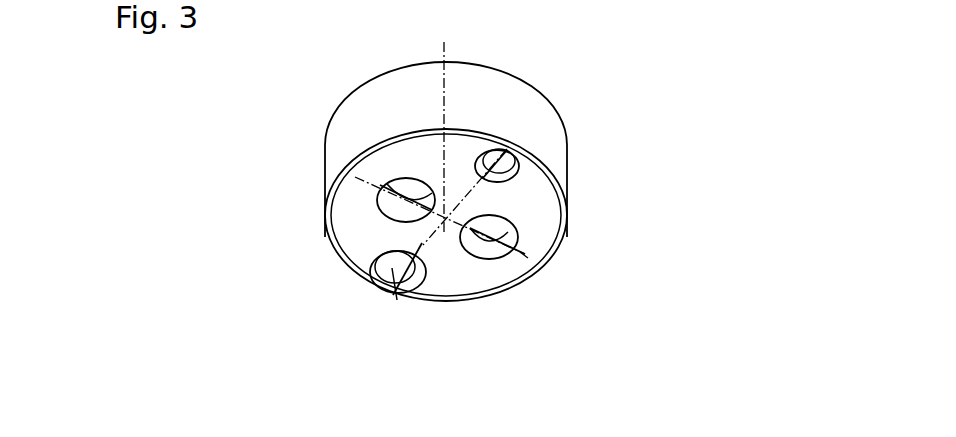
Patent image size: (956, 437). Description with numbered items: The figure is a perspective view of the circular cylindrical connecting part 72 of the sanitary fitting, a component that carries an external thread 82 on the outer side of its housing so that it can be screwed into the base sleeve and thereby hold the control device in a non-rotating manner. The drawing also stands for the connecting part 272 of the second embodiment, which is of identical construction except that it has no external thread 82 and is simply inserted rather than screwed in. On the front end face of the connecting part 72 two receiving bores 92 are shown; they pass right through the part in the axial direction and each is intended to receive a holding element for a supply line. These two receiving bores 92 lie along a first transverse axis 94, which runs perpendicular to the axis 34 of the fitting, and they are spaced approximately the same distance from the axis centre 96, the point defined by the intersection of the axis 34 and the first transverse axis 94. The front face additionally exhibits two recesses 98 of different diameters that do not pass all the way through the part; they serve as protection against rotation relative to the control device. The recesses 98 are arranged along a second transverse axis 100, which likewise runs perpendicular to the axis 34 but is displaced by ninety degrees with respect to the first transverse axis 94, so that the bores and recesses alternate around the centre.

The axis 34 is at (437, 78).
The connecting part 72 is at (544, 152).
The connecting part 272 is at (544, 152).
The external thread 82 is at (555, 145).
The receiving bores 92 is at (387, 207).
The first transverse axis 94 is at (513, 252).
The axis centre 96 is at (447, 222).
The recesses 98 is at (493, 160).
The second transverse axis 100 is at (397, 300).